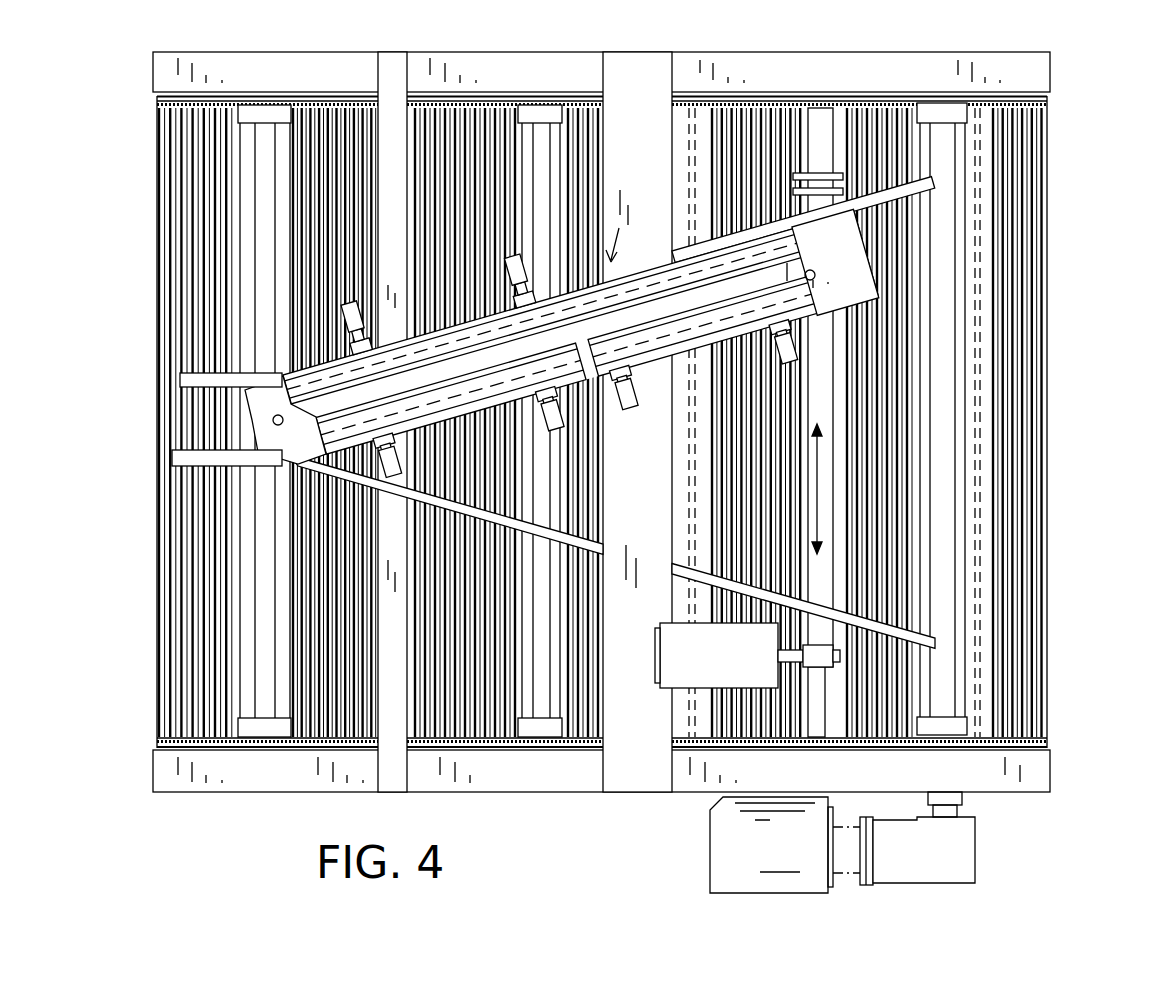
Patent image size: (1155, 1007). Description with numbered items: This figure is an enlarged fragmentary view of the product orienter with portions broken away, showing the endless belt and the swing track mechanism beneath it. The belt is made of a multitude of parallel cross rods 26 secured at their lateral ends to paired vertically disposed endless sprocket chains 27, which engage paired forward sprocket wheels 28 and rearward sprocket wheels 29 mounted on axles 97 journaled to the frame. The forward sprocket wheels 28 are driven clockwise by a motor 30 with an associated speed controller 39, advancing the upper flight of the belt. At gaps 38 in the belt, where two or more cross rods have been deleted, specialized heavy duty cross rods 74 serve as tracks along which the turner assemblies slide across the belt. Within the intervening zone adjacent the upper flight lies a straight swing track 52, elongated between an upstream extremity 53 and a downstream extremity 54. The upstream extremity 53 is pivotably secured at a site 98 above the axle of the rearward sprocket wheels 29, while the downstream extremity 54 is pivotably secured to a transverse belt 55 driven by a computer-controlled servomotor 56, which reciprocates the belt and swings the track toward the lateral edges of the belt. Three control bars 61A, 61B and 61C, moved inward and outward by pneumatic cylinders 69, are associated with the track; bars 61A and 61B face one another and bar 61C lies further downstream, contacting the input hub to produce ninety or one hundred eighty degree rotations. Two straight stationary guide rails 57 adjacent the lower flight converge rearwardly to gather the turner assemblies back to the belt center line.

The cross rods 26 is at (512, 108).
The sprocket chains 27 is at (782, 98).
The forward sprocket wheels 28 is at (992, 104).
The rearward sprocket wheels 29 is at (287, 748).
The motor 30 is at (752, 866).
The gaps 38 is at (608, 70).
The speed controller 39 is at (958, 868).
The swing track 52 is at (621, 229).
The upstream extremity 53 is at (257, 432).
The downstream extremity 54 is at (833, 240).
The transverse belt 55 is at (868, 665).
The servomotor 56 is at (735, 670).
The guide rails 57 is at (670, 254).
The control bar 61A is at (588, 318).
The control bar 61B is at (362, 401).
The control bar 61C is at (768, 296).
The pneumatic cylinders 69 is at (346, 300).
The heavy duty cross rods 74 is at (568, 722).
The axles 97 is at (945, 503).
The pivot site 98 is at (182, 389).